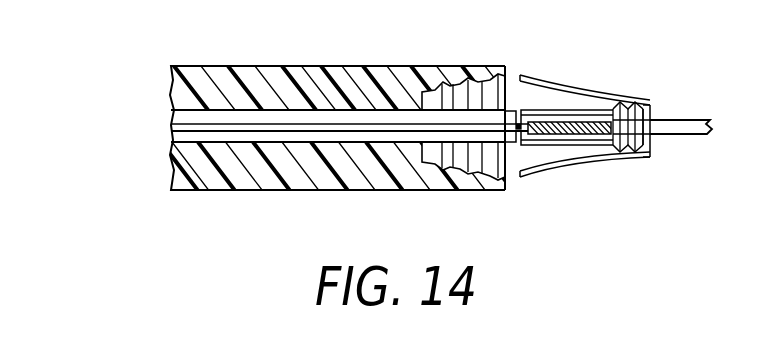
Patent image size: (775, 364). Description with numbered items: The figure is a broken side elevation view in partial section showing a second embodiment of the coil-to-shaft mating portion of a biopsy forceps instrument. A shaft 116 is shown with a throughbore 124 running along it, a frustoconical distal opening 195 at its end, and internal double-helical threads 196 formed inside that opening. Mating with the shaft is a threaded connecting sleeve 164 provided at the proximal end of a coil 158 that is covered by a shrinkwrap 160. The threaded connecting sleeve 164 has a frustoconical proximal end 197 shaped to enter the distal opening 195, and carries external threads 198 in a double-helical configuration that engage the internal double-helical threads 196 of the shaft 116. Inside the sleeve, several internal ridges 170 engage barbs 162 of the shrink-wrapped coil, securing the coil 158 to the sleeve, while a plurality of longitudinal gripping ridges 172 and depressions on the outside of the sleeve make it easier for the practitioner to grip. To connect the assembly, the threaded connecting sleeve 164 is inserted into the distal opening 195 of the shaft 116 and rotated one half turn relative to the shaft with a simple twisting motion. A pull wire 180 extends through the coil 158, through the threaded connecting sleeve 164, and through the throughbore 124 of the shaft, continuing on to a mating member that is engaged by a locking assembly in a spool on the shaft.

The shaft 116 is at (222, 66).
The throughbore 124 is at (268, 139).
The pull wire 180 is at (323, 132).
The frustoconical distal opening 195 is at (430, 88).
The frustoconical proximal end 197 is at (455, 85).
The internal double-helical threads 196 is at (445, 163).
The external threads 198 is at (480, 172).
The longitudinal gripping ridges 172 is at (533, 78).
The threaded connecting sleeve 164 is at (545, 103).
The coil 158 is at (588, 120).
The barbs 162 is at (632, 106).
The internal ridges 170 is at (650, 103).
The shrinkwrap 160 is at (689, 136).